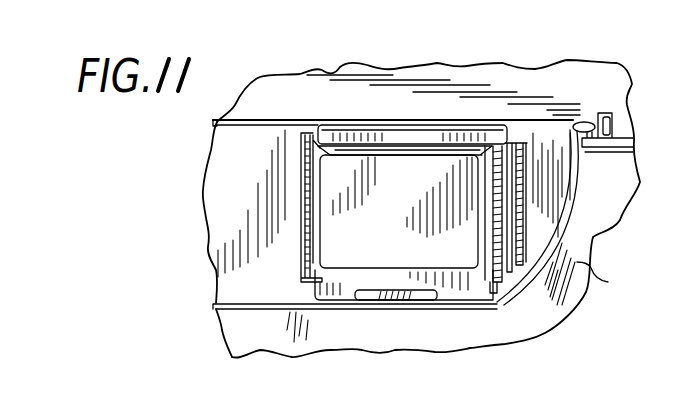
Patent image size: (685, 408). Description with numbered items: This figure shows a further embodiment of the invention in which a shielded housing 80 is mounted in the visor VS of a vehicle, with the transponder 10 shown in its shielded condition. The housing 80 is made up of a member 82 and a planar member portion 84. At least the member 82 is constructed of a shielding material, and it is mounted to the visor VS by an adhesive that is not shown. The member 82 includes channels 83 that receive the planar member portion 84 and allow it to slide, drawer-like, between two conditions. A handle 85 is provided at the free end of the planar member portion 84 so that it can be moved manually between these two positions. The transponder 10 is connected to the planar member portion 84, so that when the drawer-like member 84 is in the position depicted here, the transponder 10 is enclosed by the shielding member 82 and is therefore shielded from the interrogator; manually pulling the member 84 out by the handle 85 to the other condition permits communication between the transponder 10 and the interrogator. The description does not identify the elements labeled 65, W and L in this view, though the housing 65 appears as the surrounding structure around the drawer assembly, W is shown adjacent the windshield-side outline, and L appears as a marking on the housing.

The transponder 10 is at (350, 266).
The housing 65 is at (220, 240).
The shielded housing 80 is at (643, 232).
The member 82 is at (527, 143).
The channels 83 is at (492, 125).
The planar member portion 84 is at (497, 300).
The handle 85 is at (420, 301).
The visor VS is at (557, 168).
The windshield W is at (602, 284).
The light/lamp L is at (538, 148).